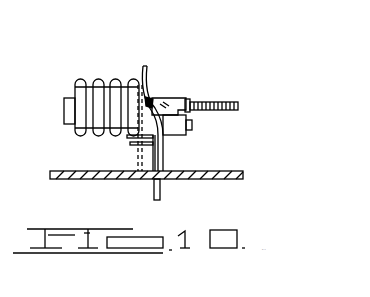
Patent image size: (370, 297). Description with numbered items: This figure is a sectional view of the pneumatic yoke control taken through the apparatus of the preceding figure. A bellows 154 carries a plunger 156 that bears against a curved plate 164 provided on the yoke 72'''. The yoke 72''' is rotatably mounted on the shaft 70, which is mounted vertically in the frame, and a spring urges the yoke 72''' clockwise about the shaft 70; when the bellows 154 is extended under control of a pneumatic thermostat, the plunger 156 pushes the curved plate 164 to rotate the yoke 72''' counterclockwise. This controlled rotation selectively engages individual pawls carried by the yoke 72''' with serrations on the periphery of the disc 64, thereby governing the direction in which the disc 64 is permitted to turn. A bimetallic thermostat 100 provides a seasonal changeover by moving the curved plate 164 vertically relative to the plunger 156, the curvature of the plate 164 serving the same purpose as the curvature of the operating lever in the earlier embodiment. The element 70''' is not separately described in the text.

The bellows 154 is at (98, 78).
The curved plate 164 is at (145, 72).
The plunger 156 is at (148, 97).
The yoke 72''' is at (178, 96).
The disc 64 is at (213, 102).
The terminal block 70''' is at (197, 125).
The shaft 70 is at (116, 128).
The bimetallic thermostat 100 is at (160, 197).